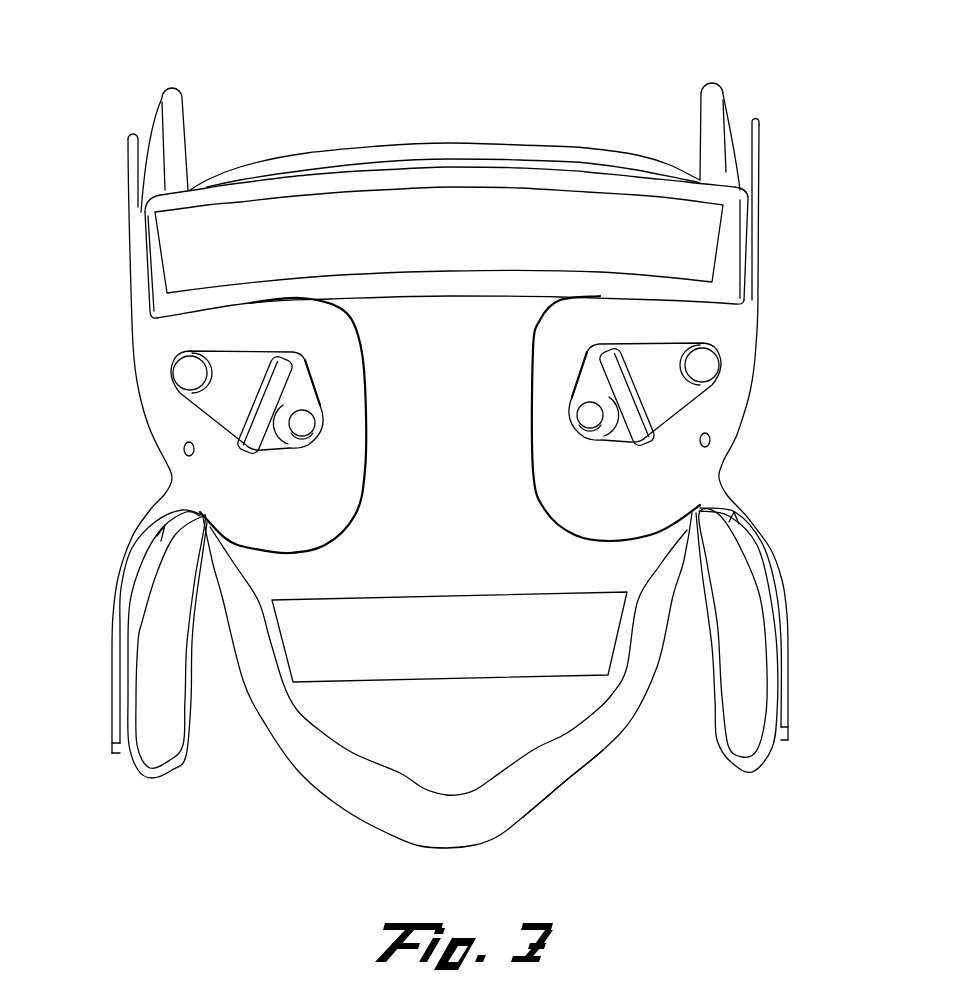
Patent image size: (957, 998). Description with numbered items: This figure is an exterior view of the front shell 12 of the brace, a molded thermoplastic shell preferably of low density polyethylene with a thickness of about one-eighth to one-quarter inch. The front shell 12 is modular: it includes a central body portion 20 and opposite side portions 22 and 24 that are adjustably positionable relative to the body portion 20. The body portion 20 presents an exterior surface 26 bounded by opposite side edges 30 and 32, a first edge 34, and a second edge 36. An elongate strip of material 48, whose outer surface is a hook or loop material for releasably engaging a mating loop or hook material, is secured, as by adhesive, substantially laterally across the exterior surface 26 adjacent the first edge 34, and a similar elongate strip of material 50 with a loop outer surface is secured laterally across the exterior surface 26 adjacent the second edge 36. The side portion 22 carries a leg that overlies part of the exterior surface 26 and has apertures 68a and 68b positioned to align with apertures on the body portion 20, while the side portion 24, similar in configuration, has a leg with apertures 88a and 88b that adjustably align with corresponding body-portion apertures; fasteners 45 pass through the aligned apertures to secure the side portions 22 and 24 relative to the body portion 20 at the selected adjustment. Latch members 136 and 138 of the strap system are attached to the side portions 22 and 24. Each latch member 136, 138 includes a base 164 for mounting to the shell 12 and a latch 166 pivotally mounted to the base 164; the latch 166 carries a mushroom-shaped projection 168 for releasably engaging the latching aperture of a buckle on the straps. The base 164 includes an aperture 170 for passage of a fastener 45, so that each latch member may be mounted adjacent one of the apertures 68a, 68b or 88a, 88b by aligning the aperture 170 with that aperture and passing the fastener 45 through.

The front shell 12 is at (417, 98).
The central body portion 20 is at (314, 762).
The side portion 22 is at (109, 158).
The side portion 24 is at (780, 124).
The exterior surface 26 is at (421, 463).
The side edge 30 is at (230, 691).
The side edge 32 is at (684, 670).
The first edge 34 is at (552, 143).
The second edge 36 is at (579, 804).
The fastener 45 is at (302, 428).
The elongate strip of material 48 is at (426, 236).
The elongate strip of material 50 is at (434, 644).
The aperture 68a is at (183, 447).
The aperture 68b is at (297, 438).
The aperture 88a is at (717, 447).
The aperture 88b is at (590, 432).
The latch member 136 is at (316, 374).
The latch member 138 is at (689, 384).
The base 164 is at (277, 433).
The latch 166 is at (236, 380).
The mushroom-shaped projection 168 is at (189, 372).
The aperture 170 is at (324, 420).